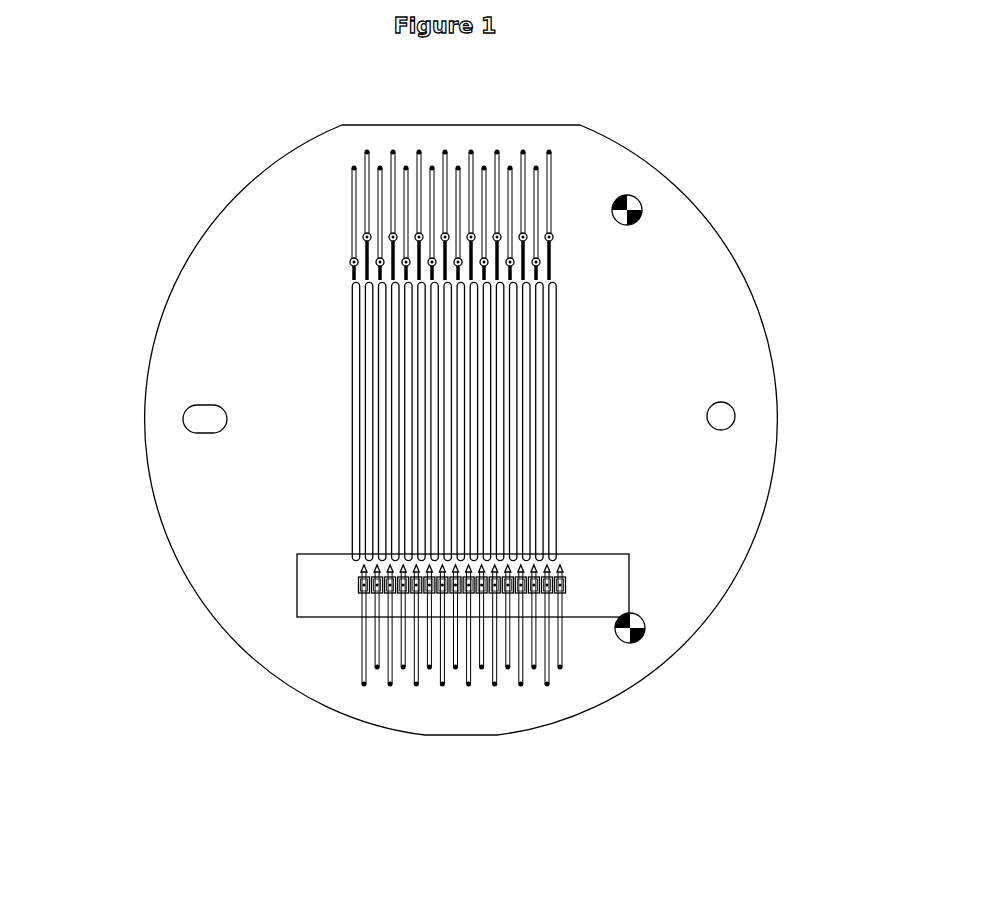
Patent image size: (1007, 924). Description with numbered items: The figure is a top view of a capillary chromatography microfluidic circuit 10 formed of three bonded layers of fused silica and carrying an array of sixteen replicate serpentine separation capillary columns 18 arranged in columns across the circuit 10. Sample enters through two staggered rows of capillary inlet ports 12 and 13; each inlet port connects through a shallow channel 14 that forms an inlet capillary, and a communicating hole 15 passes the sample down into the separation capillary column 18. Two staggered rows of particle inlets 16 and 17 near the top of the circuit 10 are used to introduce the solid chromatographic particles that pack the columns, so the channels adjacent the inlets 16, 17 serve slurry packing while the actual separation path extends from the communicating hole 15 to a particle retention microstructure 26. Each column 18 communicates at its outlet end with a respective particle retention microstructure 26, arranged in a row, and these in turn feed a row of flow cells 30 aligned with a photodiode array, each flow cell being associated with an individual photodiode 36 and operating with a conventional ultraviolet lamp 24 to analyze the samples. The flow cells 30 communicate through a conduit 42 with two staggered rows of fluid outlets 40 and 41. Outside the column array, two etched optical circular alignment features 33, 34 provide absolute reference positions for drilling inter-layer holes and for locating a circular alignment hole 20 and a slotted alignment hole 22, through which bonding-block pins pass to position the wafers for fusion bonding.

The capillary chromatography microfluidic circuit 10 is at (737, 250).
The capillary inlet port 12 is at (531, 161).
The capillary inlet port 13 is at (510, 167).
The shallow channel 14 is at (553, 193).
The communicating hole 15 is at (556, 280).
The particle inlet 16 is at (351, 260).
The particle inlet 17 is at (364, 235).
The serpentine separation capillary column 18 is at (352, 360).
The circular alignment hole 20 is at (734, 412).
The slotted alignment hole 22 is at (182, 412).
The ultraviolet lamp 24 is at (297, 587).
The particle retention microstructure 26 is at (560, 565).
The flow cell 30 is at (566, 585).
The optical circular alignment feature 33 is at (641, 197).
The optical circular alignment feature 34 is at (645, 636).
The photodiode 36 is at (566, 594).
The fluid outlet 40 is at (363, 673).
The fluid outlet 41 is at (403, 670).
The conduit 42 is at (362, 634).